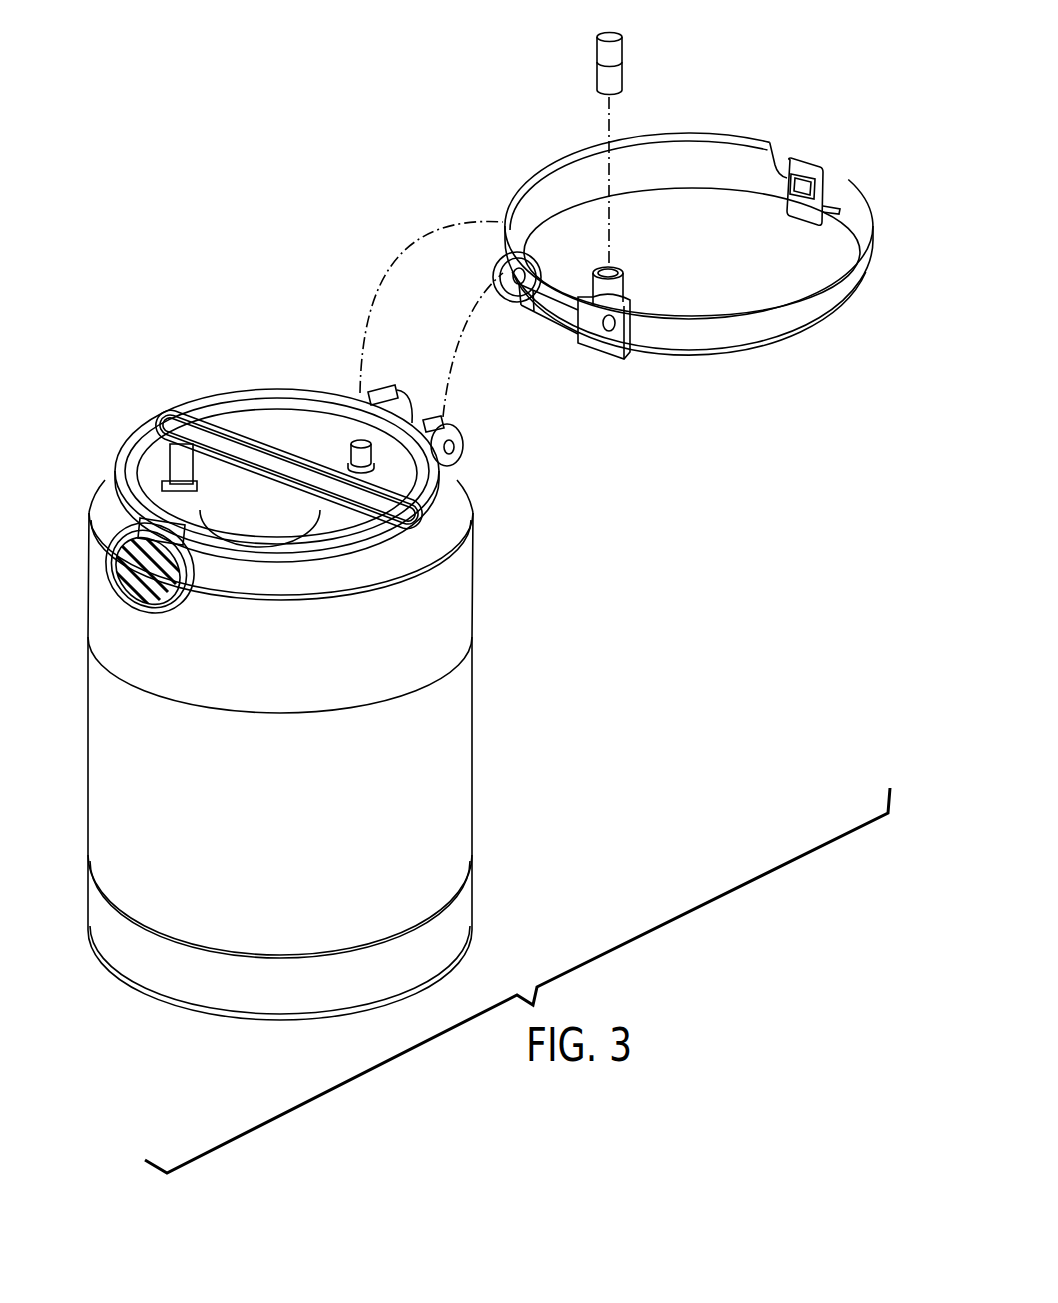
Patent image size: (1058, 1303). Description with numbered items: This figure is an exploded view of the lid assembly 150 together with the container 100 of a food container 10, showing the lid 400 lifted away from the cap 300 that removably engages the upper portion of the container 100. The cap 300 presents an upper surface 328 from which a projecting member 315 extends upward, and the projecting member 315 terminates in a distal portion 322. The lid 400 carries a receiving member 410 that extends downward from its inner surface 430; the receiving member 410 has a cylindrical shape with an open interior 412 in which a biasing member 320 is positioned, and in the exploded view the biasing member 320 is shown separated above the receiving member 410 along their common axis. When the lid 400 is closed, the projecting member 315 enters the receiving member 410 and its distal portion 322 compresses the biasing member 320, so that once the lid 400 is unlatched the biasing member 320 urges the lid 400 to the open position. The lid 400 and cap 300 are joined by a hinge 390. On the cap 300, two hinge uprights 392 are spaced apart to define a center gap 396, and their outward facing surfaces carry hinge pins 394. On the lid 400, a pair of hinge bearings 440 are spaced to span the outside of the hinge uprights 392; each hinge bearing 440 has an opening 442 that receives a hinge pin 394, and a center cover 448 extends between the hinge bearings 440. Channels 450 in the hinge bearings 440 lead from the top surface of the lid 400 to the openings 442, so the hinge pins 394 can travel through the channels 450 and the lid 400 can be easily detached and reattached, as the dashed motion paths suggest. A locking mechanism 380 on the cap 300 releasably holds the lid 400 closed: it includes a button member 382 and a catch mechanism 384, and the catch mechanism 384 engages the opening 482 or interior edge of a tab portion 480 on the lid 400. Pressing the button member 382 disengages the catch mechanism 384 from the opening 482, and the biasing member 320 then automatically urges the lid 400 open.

The food container 10 is at (645, 518).
The container 100 is at (440, 797).
The lid assembly 150 is at (237, 323).
The cap 300 is at (478, 612).
The projecting member 315 is at (295, 440).
The biasing member 320 is at (596, 57).
The distal portion 322 is at (360, 440).
The upper surface 328 is at (297, 440).
The locking mechanism 380 is at (207, 612).
The button member 382 is at (152, 600).
The catch mechanism 384 is at (160, 525).
The hinge 390 is at (457, 280).
The hinge uprights 392 is at (372, 398).
The hinge pins 394 is at (462, 448).
The center gap 396 is at (420, 405).
The lid 400 is at (793, 350).
The receiving member 410 is at (622, 287).
The open interior 412 is at (603, 270).
The inner surface 430 is at (698, 232).
The hinge bearings 440 is at (613, 350).
The openings 442 is at (618, 323).
The center cover 448 is at (540, 323).
The channels 450 is at (587, 403).
The tab portion 480 is at (837, 193).
The opening 482 is at (807, 183).